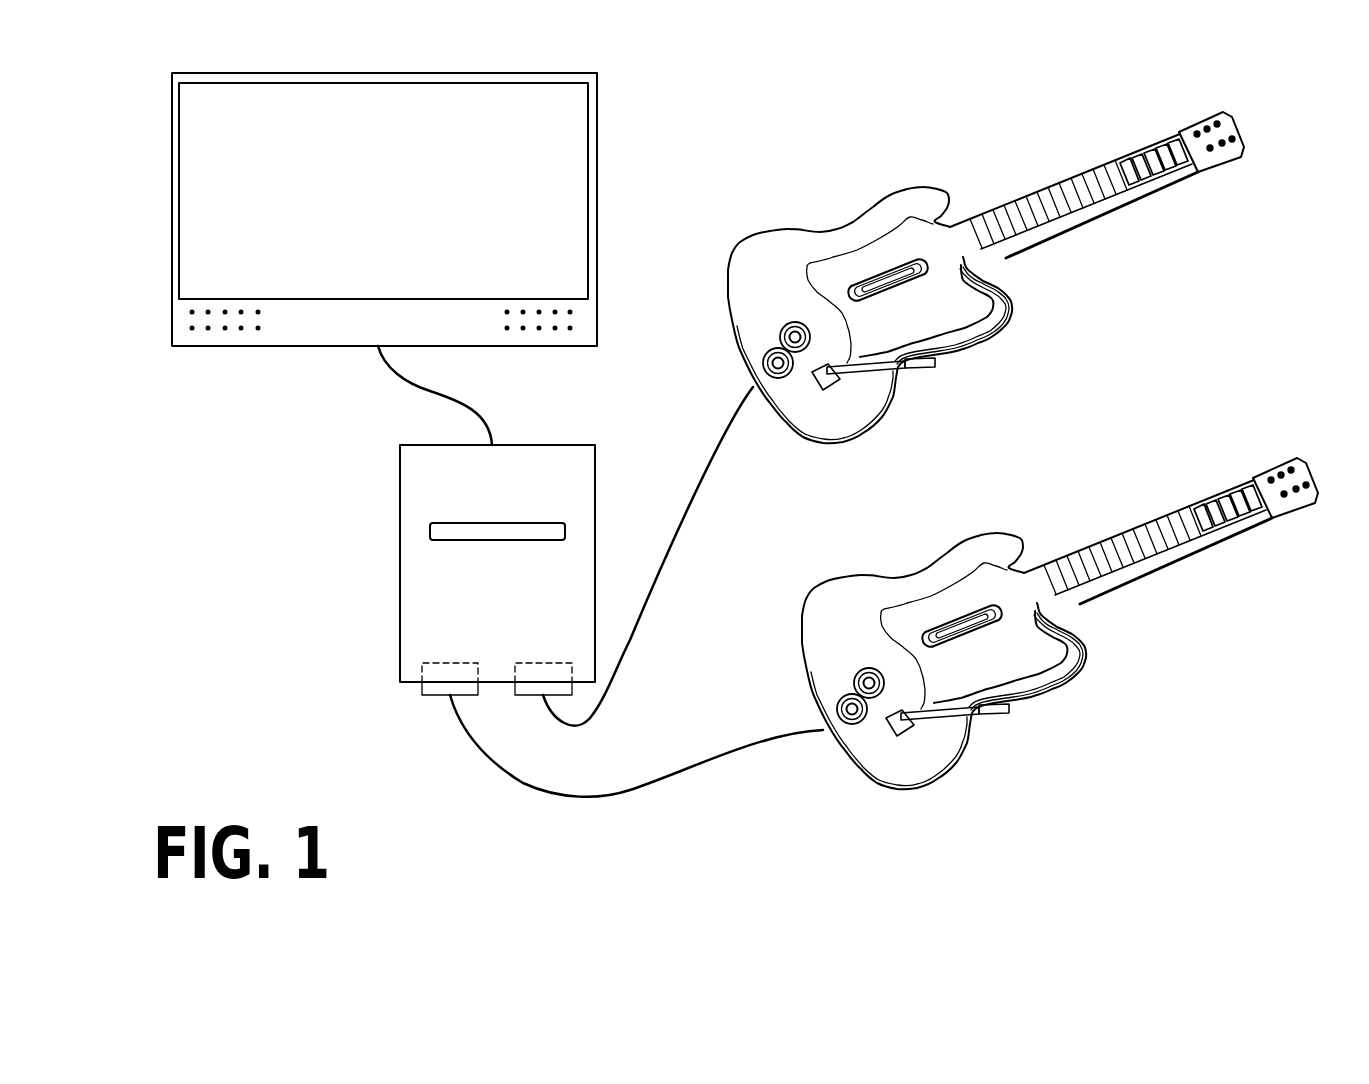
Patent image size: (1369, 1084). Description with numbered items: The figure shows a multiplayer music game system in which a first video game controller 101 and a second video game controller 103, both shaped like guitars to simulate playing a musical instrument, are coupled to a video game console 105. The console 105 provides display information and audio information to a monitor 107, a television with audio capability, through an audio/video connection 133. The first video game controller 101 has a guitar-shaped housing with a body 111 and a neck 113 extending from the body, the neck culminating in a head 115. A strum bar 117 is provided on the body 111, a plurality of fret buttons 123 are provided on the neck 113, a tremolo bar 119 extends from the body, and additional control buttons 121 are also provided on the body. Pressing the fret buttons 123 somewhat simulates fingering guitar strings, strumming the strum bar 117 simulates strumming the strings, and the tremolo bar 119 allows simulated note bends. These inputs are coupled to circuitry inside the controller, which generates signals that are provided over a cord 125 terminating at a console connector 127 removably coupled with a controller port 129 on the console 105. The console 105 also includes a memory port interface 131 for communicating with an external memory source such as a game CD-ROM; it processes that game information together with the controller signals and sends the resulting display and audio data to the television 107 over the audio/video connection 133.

The first video game controller 101 is at (786, 173).
The second video game controller 103 is at (1040, 709).
The video game console 105 is at (400, 623).
The monitor 107 is at (272, 360).
The body 111 is at (743, 249).
The neck 113 is at (1030, 197).
The head 115 is at (1197, 127).
The strum bar 117 is at (880, 294).
The tremolo bar 119 is at (910, 372).
The control buttons 121 is at (792, 325).
The fret buttons 123 is at (1136, 184).
The cord 125 is at (672, 537).
The console connector 127 is at (530, 697).
The controller port 129 is at (547, 663).
The memory port interface 131 is at (470, 522).
The audio/video connection 133 is at (458, 405).